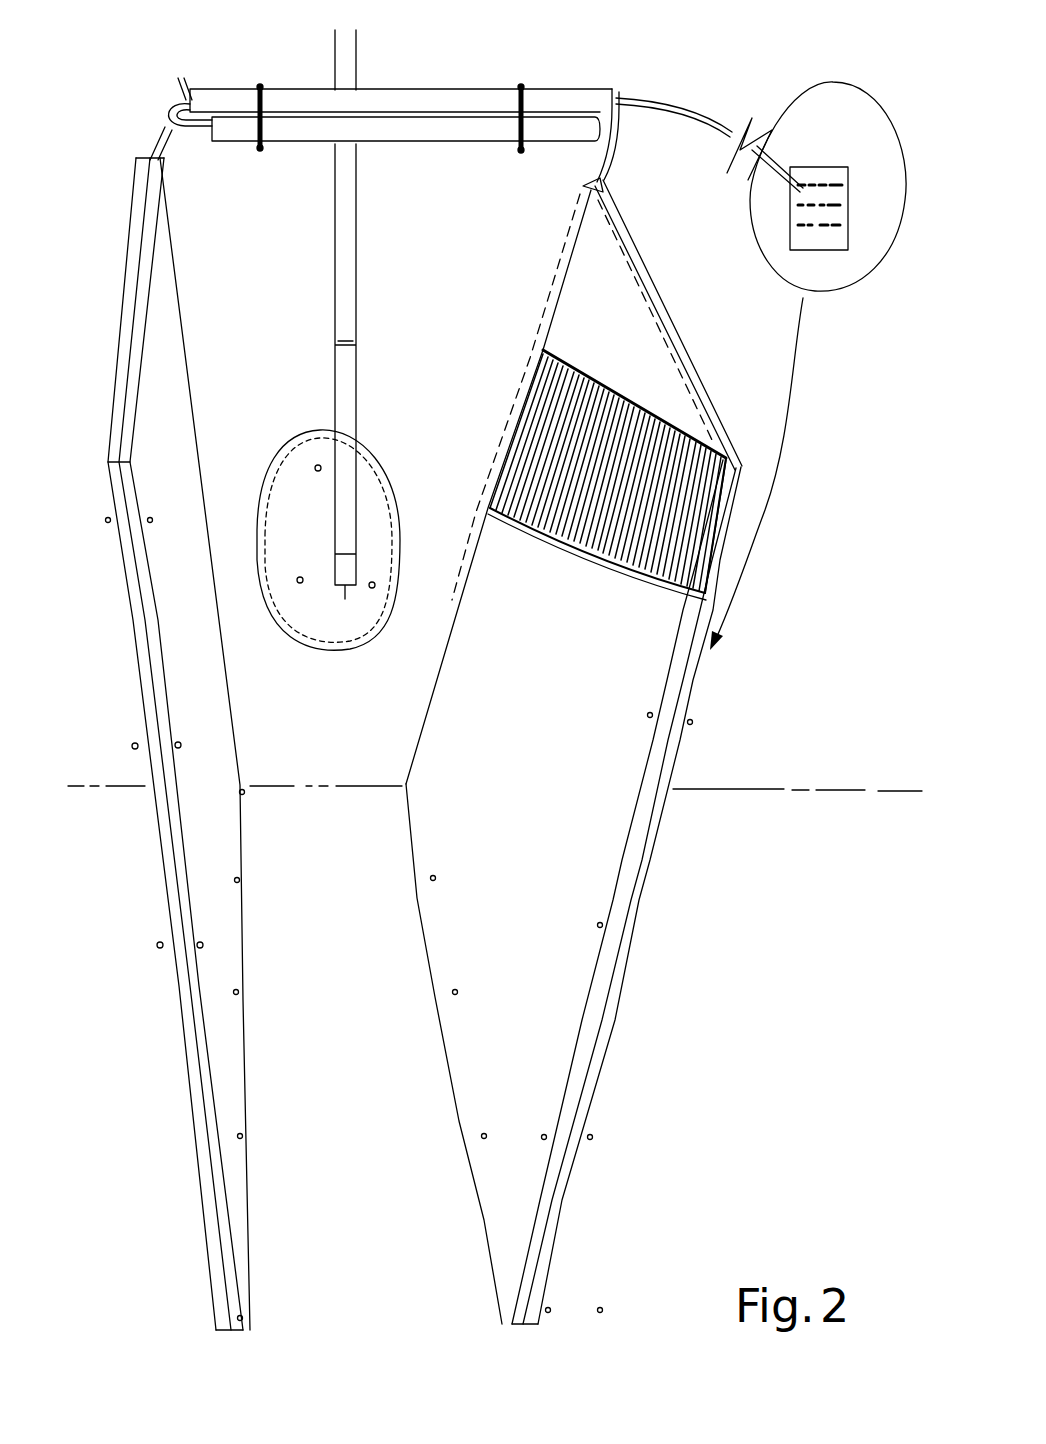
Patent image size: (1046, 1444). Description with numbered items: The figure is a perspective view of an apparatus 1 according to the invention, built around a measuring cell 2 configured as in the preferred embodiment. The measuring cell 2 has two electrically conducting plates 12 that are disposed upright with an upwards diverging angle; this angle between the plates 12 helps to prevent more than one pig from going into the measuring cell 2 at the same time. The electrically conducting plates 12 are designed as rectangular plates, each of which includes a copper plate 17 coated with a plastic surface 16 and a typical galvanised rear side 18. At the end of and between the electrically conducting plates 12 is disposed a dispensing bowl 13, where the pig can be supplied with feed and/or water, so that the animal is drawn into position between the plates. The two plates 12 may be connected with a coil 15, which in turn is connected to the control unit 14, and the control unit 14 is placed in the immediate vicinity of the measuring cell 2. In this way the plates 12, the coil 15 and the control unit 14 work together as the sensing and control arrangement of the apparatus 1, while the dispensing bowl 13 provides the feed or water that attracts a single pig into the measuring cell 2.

The apparatus 1 is at (103, 634).
The measuring cell 2 is at (650, 1178).
The electrically conducting plates 12 is at (235, 1300).
The dispensing bowl 13 is at (372, 495).
The control unit 14 is at (860, 262).
The coil 15 is at (485, 120).
The plastic surface 16 is at (650, 583).
The copper plate 17 is at (665, 430).
The galvanised rear side 18 is at (628, 982).